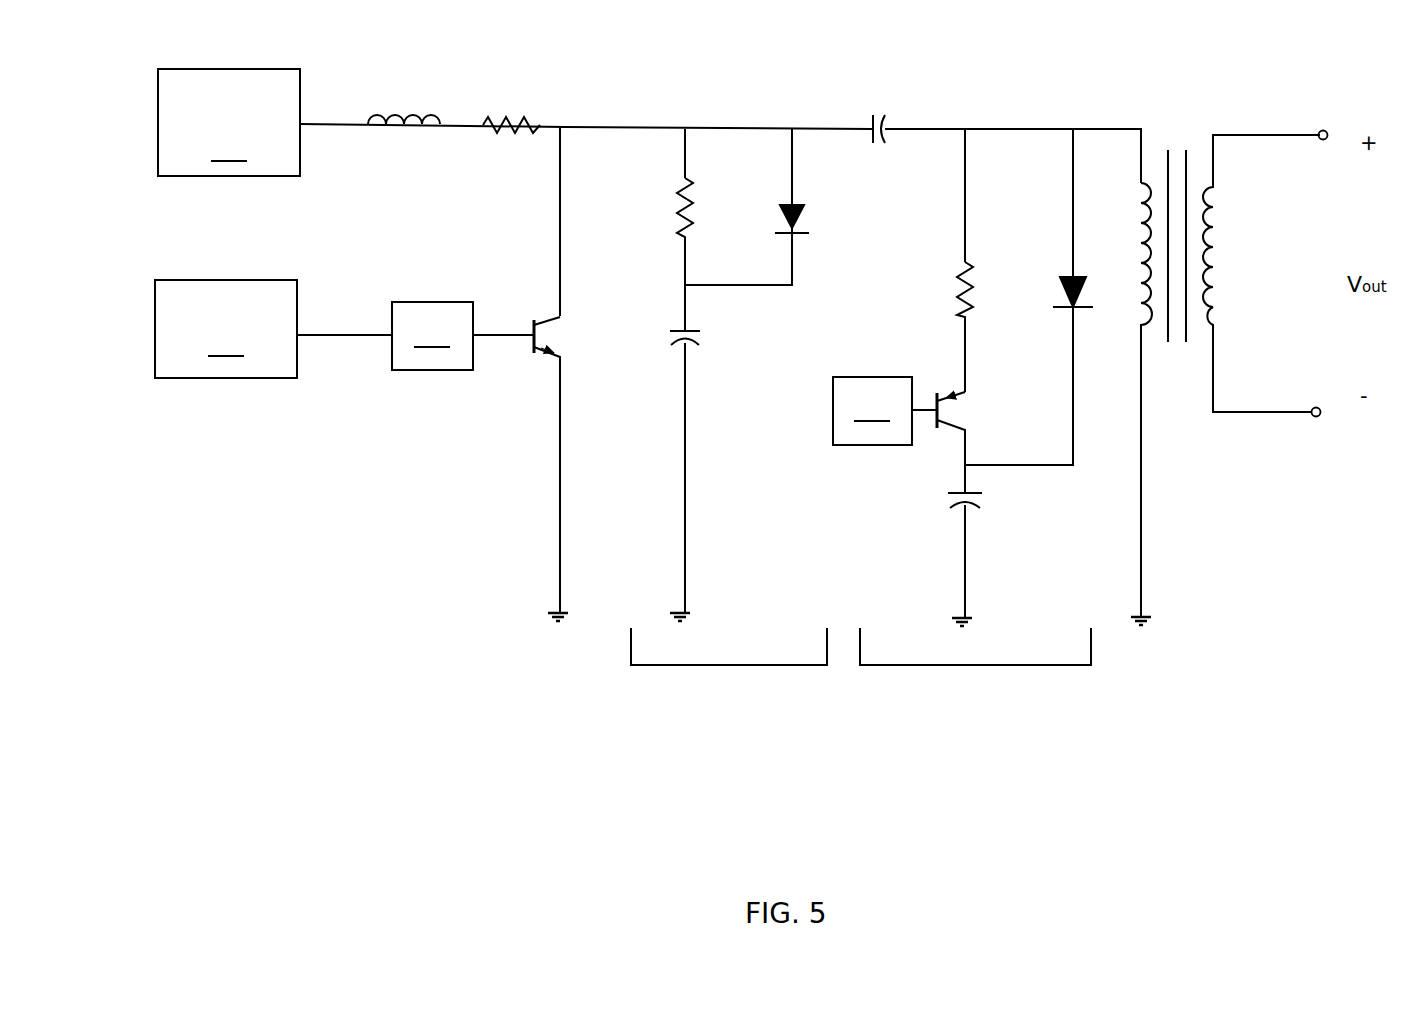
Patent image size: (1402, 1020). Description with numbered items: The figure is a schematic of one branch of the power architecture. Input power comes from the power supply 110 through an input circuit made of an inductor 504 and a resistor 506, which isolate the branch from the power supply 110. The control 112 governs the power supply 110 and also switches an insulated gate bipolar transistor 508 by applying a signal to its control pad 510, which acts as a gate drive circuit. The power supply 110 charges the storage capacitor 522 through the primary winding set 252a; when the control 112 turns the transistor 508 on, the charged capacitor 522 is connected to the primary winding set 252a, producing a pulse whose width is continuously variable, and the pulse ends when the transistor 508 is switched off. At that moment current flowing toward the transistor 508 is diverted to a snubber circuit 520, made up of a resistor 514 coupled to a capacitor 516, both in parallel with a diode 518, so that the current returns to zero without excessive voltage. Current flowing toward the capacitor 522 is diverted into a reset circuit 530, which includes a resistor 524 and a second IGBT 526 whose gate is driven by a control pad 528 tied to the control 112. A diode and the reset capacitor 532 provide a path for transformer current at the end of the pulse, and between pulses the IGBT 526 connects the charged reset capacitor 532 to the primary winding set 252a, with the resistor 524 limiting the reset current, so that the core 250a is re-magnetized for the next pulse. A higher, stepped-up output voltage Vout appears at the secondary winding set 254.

The power supply 110 is at (229, 122).
The control 112 is at (226, 329).
The inductor 504 is at (427, 108).
The resistor 506 is at (495, 104).
The Insulated Gate Bipolar Transistor (IGBT) 508 is at (578, 330).
The control pad 510 is at (432, 336).
The resistor 514 is at (706, 214).
The capacitor 516 is at (709, 338).
The diode 518 is at (811, 216).
The snubber circuit 520 is at (1095, 299).
The capacitor 522 is at (877, 102).
The resistor 524 is at (993, 292).
The IGBT 526 is at (985, 412).
The control pad 528 is at (872, 411).
The reset circuit 530 is at (995, 670).
The reset capacitor 532 is at (991, 492).
The primary winding set 252a is at (1152, 150).
The core 250a is at (1183, 136).
The secondary winding set 254 is at (1238, 222).